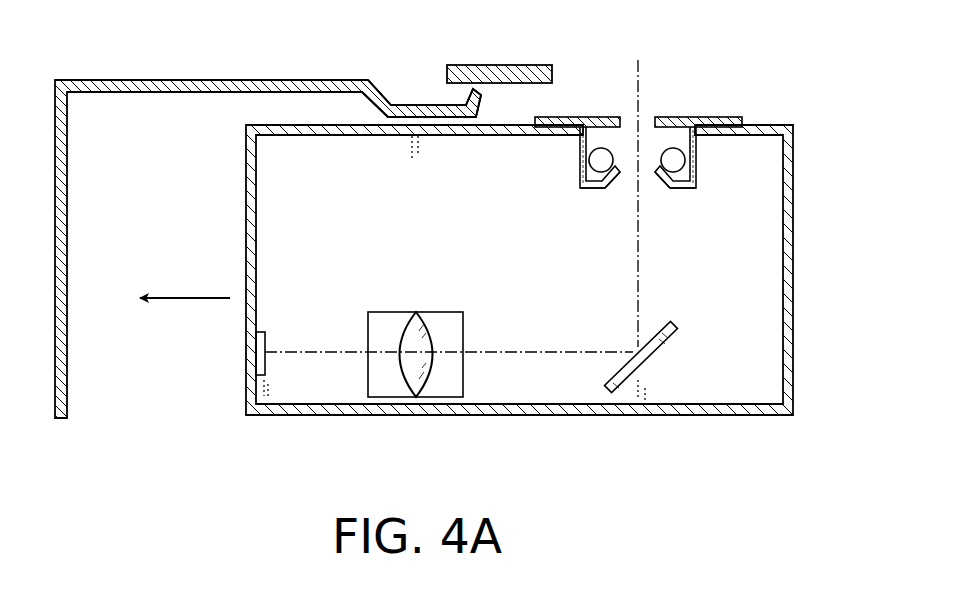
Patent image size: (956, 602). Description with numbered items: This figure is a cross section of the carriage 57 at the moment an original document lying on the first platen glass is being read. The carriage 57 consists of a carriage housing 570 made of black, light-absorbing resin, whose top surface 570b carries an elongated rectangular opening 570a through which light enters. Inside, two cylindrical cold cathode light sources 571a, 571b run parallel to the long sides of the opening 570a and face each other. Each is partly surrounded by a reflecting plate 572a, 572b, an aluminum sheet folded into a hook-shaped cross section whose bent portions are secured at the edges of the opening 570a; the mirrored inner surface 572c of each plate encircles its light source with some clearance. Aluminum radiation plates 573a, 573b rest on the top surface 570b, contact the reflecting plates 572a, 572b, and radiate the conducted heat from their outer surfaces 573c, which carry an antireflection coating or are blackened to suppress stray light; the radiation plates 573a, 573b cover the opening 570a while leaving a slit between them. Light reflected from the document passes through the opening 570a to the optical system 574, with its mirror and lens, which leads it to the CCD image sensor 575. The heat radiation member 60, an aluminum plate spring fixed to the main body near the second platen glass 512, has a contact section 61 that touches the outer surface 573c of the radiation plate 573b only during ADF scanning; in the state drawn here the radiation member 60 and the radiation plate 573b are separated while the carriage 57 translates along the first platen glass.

The carriage 57 is at (529, 432).
The heat radiation member 60 is at (197, 80).
The contact section 61 is at (407, 98).
The second platen glass 512 is at (520, 33).
The carriage housing 570 is at (690, 412).
The rectangular opening 570a is at (648, 122).
The top surface 570b is at (338, 137).
The light source 571a is at (678, 163).
The light source 571b is at (592, 157).
The reflecting plate 572a is at (697, 180).
The reflecting plate 572b is at (615, 190).
The inner surface 572c is at (578, 190).
The radiation plate 573a is at (703, 117).
The radiation plate 573b is at (550, 117).
The outer surface 573c is at (597, 117).
The optical system 574 is at (601, 389).
The image sensor 575 is at (263, 343).